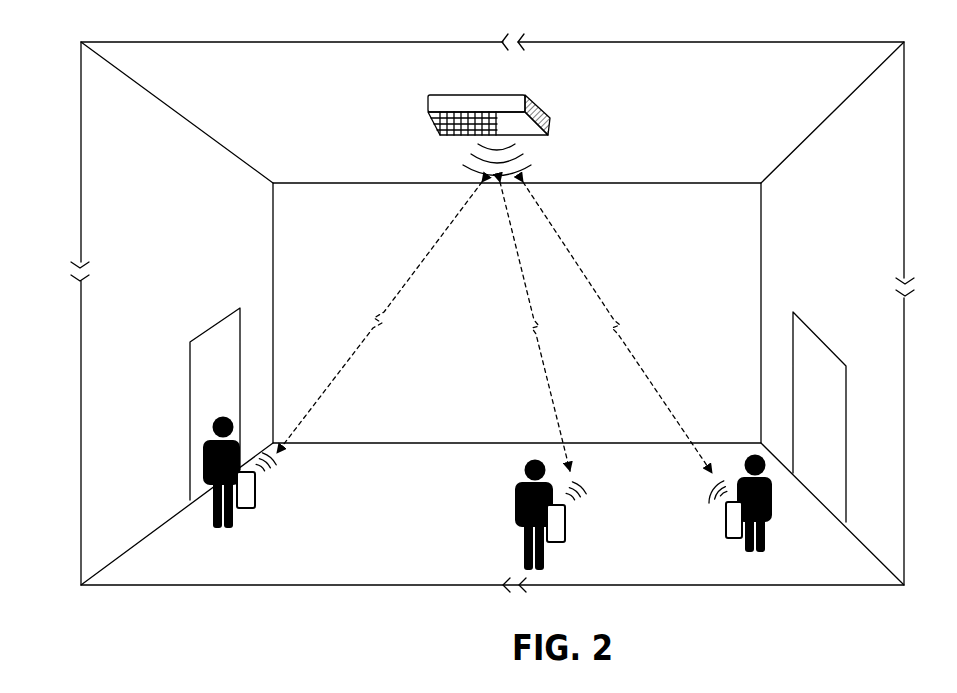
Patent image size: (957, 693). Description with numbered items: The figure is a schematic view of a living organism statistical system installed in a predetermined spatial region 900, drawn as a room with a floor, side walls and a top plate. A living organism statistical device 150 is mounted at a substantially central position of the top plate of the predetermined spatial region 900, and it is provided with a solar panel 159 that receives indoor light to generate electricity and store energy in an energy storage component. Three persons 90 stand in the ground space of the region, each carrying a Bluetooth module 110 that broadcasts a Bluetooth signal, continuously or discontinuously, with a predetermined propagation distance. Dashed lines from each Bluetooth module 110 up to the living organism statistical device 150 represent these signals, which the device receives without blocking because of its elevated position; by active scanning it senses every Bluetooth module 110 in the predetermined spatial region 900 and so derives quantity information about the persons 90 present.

The predetermined spatial region 900 is at (104, 334).
The living organism statistical device 150 is at (478, 118).
The solar panel 159 is at (446, 134).
The person 90 is at (436, 494).
The Bluetooth module 110 is at (489, 498).